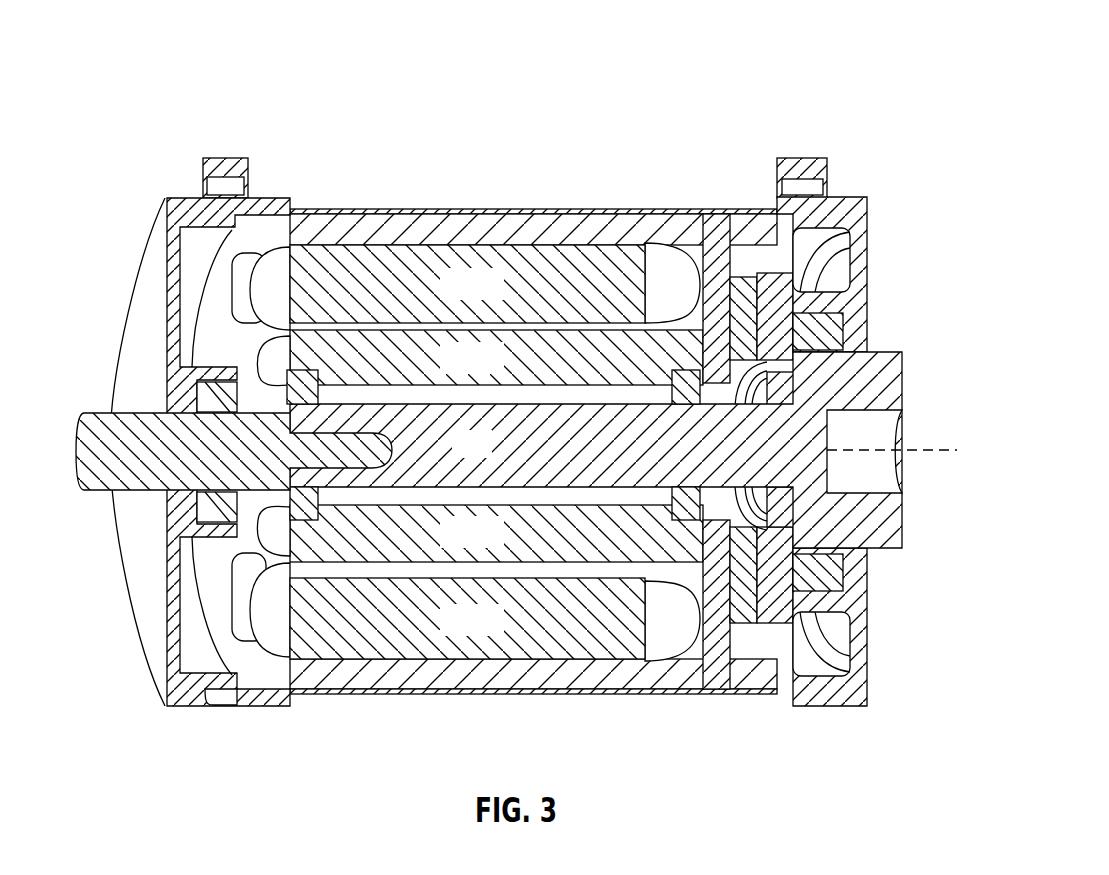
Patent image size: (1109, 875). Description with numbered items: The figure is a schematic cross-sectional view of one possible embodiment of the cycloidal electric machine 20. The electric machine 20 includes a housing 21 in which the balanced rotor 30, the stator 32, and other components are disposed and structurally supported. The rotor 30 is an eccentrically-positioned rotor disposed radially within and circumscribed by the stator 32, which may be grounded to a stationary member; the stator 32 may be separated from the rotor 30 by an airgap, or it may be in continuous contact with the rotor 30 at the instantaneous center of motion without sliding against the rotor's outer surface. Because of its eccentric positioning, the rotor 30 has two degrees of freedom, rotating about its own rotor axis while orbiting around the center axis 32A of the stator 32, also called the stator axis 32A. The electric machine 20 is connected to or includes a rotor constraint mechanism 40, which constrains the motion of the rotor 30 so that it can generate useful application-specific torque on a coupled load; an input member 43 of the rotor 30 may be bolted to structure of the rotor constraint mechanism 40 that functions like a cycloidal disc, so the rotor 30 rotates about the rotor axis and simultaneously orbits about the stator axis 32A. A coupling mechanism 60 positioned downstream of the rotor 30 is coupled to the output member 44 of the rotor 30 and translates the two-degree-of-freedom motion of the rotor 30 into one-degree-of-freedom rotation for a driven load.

The cycloidal electric machine 20 is at (852, 53).
The housing 21 is at (142, 283).
The balanced rotor 30 is at (513, 347).
The stator 32 is at (390, 290).
The center axis of the stator 32A is at (915, 447).
The rotor constraint mechanism 40 is at (693, 290).
The input member 43 is at (97, 424).
The output member 44 is at (486, 455).
The coupling mechanism 60 is at (813, 230).